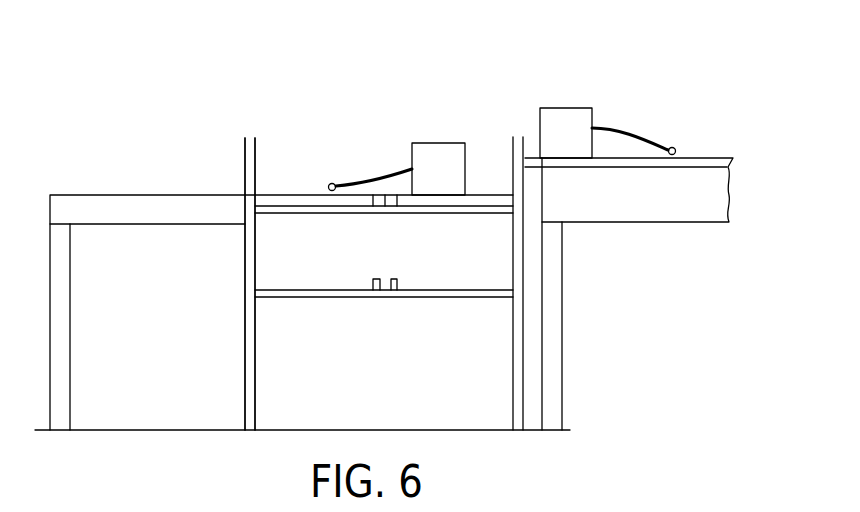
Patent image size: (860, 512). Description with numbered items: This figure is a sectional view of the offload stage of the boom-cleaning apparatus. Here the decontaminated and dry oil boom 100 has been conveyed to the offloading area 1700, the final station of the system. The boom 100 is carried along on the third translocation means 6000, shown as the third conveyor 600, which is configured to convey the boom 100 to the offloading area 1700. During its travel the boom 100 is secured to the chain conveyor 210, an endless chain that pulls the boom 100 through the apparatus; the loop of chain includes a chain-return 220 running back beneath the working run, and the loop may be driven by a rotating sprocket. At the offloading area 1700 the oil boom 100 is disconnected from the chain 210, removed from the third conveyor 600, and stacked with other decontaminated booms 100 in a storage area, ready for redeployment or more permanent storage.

The offloading area 1700 is at (250, 109).
The boom 100 is at (412, 158).
The chain conveyor 210 is at (385, 204).
The chain-return 220 is at (380, 276).
The third conveyor 600 is at (245, 272).
The third translocation means 6000 is at (200, 284).